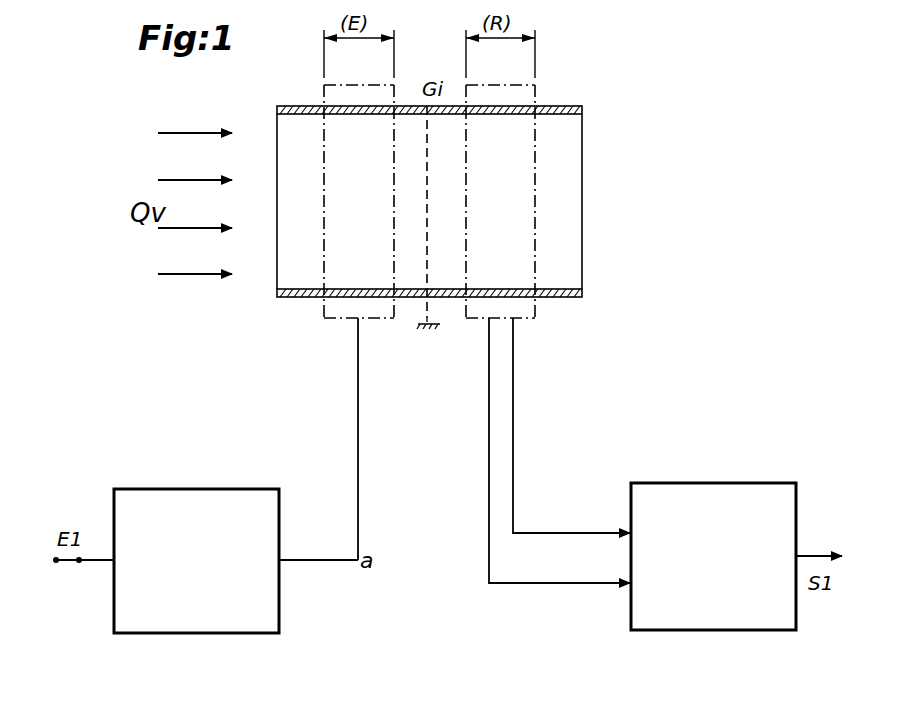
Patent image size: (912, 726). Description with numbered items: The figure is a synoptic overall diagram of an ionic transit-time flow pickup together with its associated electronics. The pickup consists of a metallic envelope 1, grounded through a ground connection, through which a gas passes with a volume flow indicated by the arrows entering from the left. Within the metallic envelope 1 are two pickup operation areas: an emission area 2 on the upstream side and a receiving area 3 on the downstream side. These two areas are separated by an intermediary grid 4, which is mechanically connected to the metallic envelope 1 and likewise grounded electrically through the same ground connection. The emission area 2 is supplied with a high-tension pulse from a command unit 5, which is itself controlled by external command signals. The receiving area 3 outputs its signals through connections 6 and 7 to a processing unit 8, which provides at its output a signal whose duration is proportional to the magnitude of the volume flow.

The metallic envelope 1 is at (568, 104).
The emission area 2 is at (325, 318).
The receiving area 3 is at (537, 318).
The intermediary grid 4 is at (428, 262).
The command unit 5 is at (216, 488).
The connection 6 is at (549, 584).
The connection 7 is at (566, 532).
The processing unit 8 is at (716, 483).